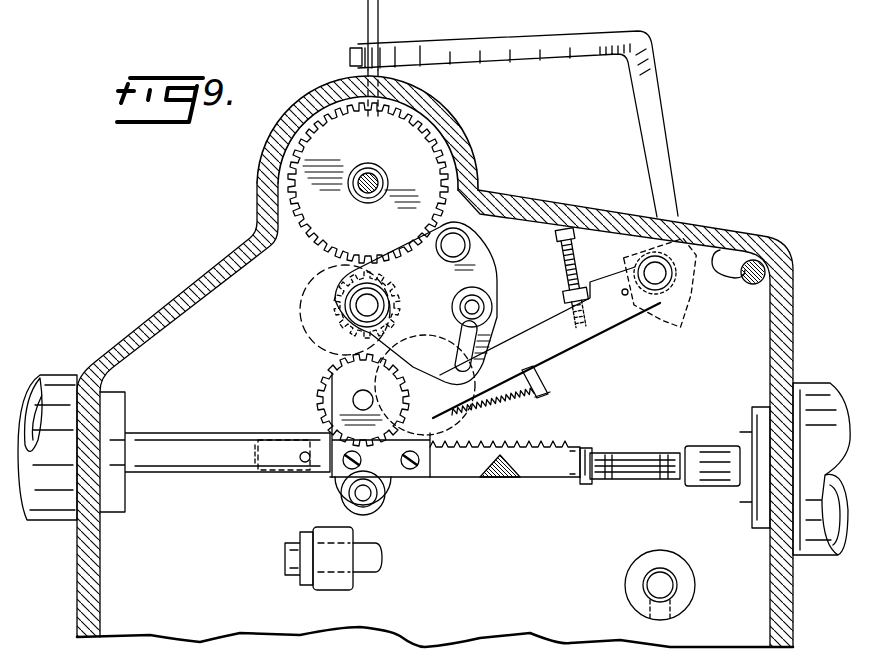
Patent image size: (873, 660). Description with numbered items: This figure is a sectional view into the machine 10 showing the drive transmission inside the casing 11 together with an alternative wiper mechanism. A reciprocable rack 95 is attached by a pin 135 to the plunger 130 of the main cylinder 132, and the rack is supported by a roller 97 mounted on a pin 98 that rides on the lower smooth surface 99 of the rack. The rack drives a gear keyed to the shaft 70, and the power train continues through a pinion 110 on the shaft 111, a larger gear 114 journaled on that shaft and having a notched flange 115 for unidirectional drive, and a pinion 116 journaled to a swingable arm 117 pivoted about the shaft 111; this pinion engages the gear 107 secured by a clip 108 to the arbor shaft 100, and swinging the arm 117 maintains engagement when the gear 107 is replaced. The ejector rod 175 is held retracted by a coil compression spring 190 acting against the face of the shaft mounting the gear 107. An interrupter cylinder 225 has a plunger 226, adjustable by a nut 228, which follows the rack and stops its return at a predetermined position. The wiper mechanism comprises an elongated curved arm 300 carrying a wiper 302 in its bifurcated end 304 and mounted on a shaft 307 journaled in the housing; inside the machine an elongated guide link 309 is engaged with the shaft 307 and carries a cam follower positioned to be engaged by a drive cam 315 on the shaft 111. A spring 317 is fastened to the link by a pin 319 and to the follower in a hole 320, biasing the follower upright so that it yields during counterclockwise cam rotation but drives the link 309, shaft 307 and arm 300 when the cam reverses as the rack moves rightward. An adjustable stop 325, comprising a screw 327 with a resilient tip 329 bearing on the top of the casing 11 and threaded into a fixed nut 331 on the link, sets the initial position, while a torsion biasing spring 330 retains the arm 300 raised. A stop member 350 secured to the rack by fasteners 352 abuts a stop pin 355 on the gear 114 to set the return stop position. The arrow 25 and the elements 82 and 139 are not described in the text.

The machine 10 is at (766, 232).
The casing 11 is at (620, 218).
The direction arrow 25 is at (306, 397).
The shaft 70 is at (312, 382).
The boss 82 is at (668, 588).
The rack 95 is at (520, 480).
The roller 97 is at (375, 510).
The pin 98 is at (355, 495).
The lower smooth surface 99 is at (455, 480).
The shaft 100 is at (382, 181).
The gear 107 is at (433, 150).
The clip 108 is at (388, 152).
The pinion 110 is at (352, 258).
The shaft 111 is at (376, 300).
The larger gear 114 is at (300, 285).
The notched flange 115 is at (350, 262).
The pinion 116 is at (480, 215).
The swingable arm 117 is at (480, 265).
The plunger 130 is at (222, 470).
The main cylinder 132 is at (45, 505).
The pin 135 is at (300, 463).
The fitting 139 is at (365, 565).
The rod 175 is at (368, 192).
The coil compression spring 190 is at (355, 192).
The cylinder 225 is at (805, 560).
The plunger 226 is at (635, 458).
The nut 228 is at (690, 487).
The elongated curved arm 300 is at (662, 135).
The wiper 302 is at (382, 18).
The bifurcated end 304 is at (362, 54).
The shaft 307 is at (655, 280).
The elongated guide link 309 is at (563, 342).
The drive cam 315 is at (305, 263).
The spring 317 is at (506, 402).
The pin 319 is at (548, 394).
The hole 320 is at (450, 422).
The adjustable stop 325 is at (552, 251).
The screw 327 is at (566, 270).
The resilient tip 329 is at (577, 236).
The torsion biasing spring 330 is at (675, 292).
The fixed nut 331 is at (563, 296).
The stop member 350 is at (335, 440).
The fasteners 352 is at (410, 470).
The stop pin 355 is at (312, 358).